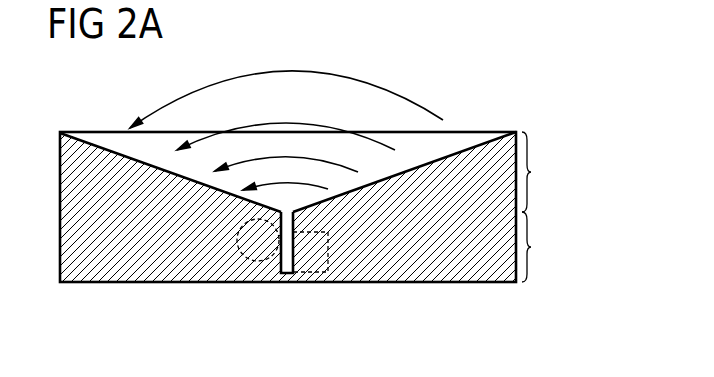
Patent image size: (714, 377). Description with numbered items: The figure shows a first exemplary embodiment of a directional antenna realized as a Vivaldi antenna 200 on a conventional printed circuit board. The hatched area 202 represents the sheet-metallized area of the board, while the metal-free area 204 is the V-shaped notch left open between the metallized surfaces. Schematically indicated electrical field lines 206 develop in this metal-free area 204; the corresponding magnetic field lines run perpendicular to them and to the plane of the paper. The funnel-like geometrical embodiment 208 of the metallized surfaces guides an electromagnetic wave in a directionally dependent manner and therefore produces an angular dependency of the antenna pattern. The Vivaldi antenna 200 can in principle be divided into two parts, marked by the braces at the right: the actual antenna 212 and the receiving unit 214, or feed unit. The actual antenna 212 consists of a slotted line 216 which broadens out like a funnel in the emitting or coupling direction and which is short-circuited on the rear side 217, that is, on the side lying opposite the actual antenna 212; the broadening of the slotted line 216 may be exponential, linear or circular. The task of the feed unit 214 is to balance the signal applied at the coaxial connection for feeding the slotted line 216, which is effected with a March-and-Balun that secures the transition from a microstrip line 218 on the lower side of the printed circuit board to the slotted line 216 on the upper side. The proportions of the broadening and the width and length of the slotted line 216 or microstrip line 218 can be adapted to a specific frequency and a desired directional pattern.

The Vivaldi antenna 200 is at (530, 90).
The hatched area 202 is at (123, 268).
The metal-free area 204 is at (457, 133).
The electrical field lines 206 is at (320, 120).
The funnel-like geometrical embodiment 208 is at (110, 134).
The actual antenna 212 is at (549, 172).
The receiving unit 214 is at (549, 247).
The slotted line 216 is at (282, 262).
The rear side 217 is at (283, 275).
The microstrip line 218 is at (298, 283).